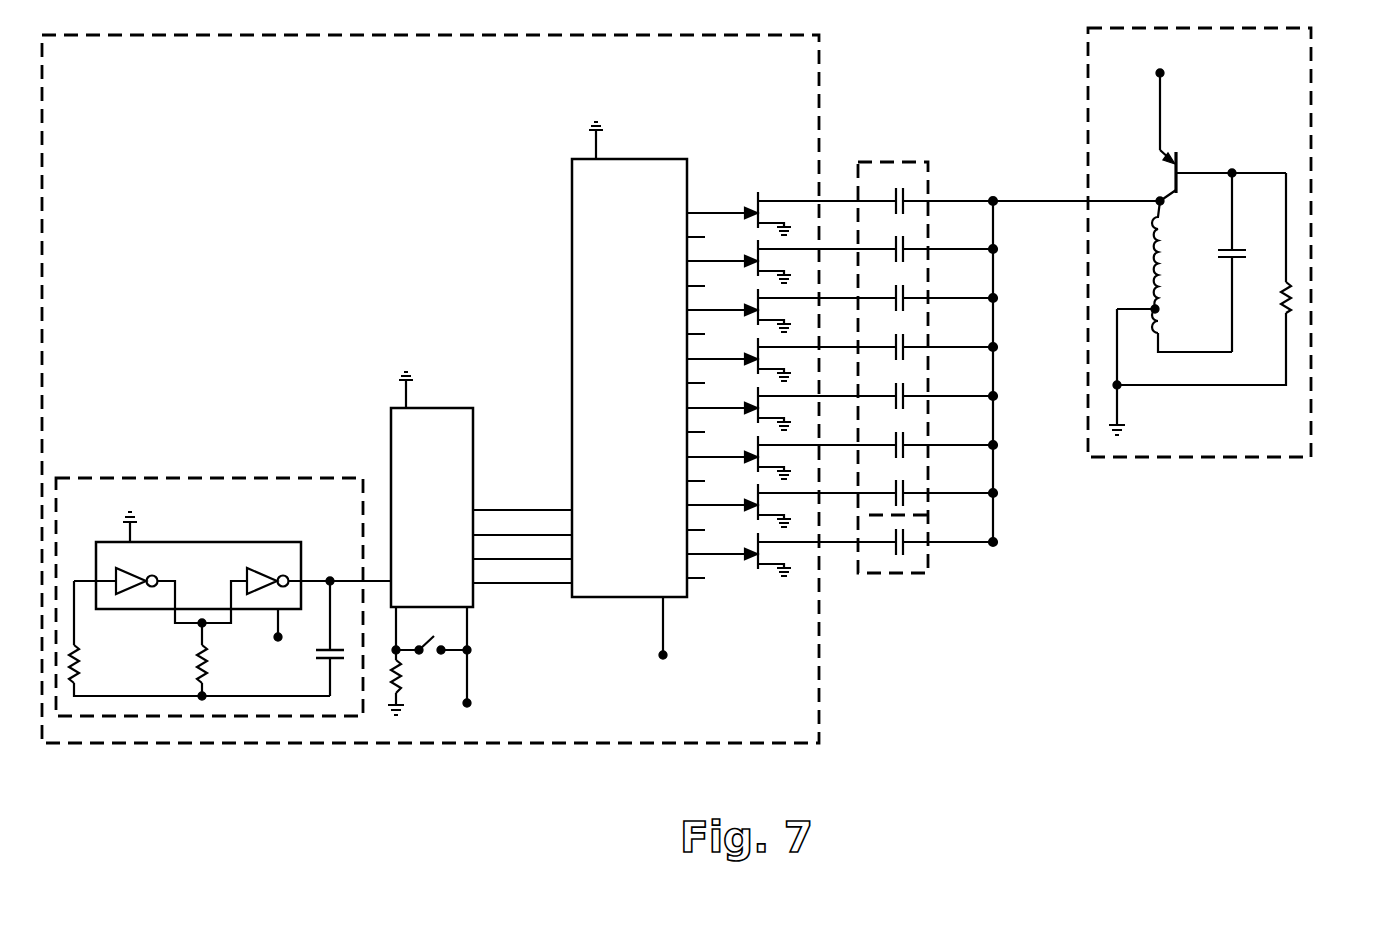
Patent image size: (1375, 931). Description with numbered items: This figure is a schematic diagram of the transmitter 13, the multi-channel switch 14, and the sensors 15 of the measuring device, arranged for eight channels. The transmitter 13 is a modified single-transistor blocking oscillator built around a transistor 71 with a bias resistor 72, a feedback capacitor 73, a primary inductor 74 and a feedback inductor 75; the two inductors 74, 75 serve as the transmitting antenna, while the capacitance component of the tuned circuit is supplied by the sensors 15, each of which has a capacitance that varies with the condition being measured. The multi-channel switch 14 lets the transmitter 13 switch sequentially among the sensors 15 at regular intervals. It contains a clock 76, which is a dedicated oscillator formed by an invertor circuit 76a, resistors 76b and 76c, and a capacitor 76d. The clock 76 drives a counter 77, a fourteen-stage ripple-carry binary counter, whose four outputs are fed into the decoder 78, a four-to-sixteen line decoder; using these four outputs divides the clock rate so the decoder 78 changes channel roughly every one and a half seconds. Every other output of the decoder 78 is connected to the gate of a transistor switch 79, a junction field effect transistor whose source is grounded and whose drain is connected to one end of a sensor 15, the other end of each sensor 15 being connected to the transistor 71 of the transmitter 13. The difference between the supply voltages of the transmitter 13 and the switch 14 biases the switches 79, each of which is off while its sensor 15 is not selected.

The transmitter 13 is at (1120, 457).
The multi-channel switch 14 is at (185, 743).
The sensors 15 is at (875, 573).
The transistor 71 is at (1177, 158).
The bias resistor 72 is at (1292, 286).
The feedback capacitor 73 is at (1226, 250).
The primary inductor 74 is at (1152, 255).
The feedback inductor 75 is at (1160, 330).
The clock 76 is at (183, 478).
The invertor circuit 76a is at (183, 542).
The resistor 76b is at (78, 662).
The resistor 76c is at (196, 660).
The capacitor 76d is at (322, 668).
The counter 77 is at (430, 408).
The decoder 78 is at (572, 289).
The transistor switches 79 is at (756, 207).